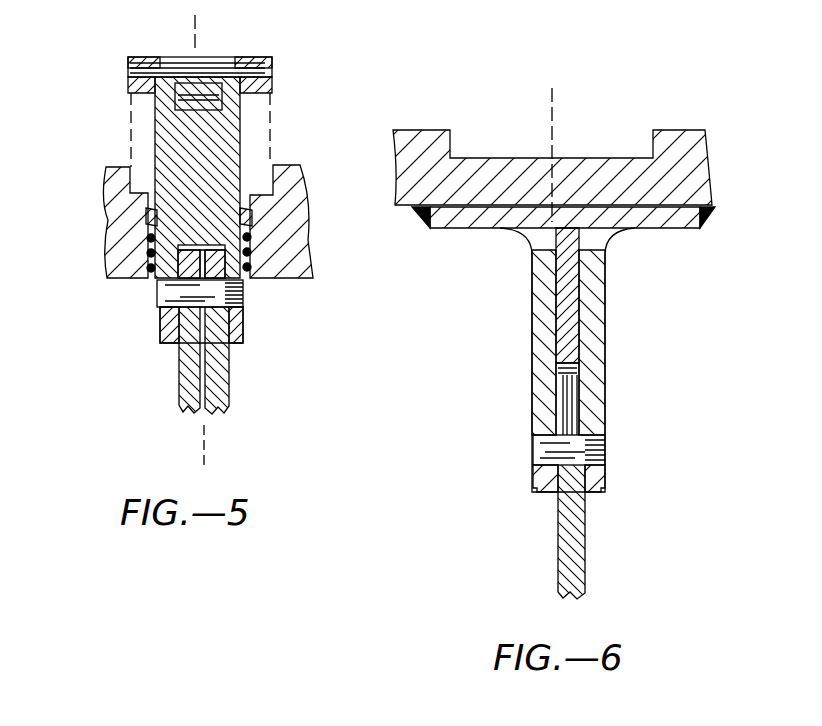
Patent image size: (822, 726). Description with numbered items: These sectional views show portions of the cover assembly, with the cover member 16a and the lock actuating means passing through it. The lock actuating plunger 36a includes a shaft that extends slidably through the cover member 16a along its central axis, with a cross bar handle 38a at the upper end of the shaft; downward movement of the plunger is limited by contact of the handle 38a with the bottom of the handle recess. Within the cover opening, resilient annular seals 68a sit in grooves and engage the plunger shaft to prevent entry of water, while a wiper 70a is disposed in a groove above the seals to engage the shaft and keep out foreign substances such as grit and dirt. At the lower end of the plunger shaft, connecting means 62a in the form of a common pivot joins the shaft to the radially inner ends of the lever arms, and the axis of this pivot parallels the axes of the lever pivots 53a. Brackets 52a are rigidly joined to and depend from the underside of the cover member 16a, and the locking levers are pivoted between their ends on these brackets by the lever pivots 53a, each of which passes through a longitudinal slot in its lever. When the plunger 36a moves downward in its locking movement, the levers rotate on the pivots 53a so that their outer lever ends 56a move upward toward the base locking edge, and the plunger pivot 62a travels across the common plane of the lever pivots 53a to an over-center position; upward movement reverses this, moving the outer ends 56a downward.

In FIG. 5, the cover member 16a is at (313, 278).
In FIG. 6, the cover member 16a is at (682, 130).
In FIG. 5, the lock actuating plunger 36a is at (242, 118).
In FIG. 5, the cross bar handle 38a is at (268, 58).
In FIG. 6, the brackets 52a is at (650, 328).
In FIG. 6, the lever pivots 53a is at (533, 450).
In FIG. 5, the outer lever ends 56a is at (230, 388).
In FIG. 5, the connecting means 62a is at (243, 300).
In FIG. 5, the resilient annular seals 68a is at (150, 267).
In FIG. 5, the wiper 70a is at (148, 220).